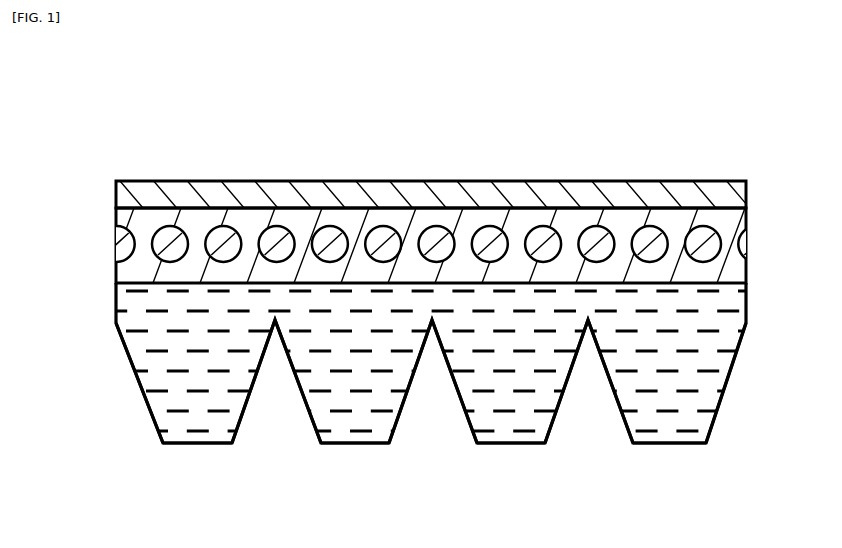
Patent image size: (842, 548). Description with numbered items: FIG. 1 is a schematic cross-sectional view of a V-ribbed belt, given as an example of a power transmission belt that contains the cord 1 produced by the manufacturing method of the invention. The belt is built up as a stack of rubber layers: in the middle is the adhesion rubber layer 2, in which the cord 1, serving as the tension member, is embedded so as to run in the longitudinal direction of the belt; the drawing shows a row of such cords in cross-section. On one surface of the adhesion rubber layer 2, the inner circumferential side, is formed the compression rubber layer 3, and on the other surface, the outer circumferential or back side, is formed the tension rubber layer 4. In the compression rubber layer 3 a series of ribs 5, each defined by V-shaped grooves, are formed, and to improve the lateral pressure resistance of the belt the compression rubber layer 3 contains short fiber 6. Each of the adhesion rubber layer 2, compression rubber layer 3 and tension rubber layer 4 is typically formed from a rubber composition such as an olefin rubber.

The cord for power transmission belt 1 is at (222, 240).
The adhesion rubber layer 2 is at (675, 222).
The compression rubber layer 3 is at (710, 317).
The tension rubber layer 4 is at (414, 196).
The rib 5 is at (195, 447).
The short fiber 6 is at (191, 392).